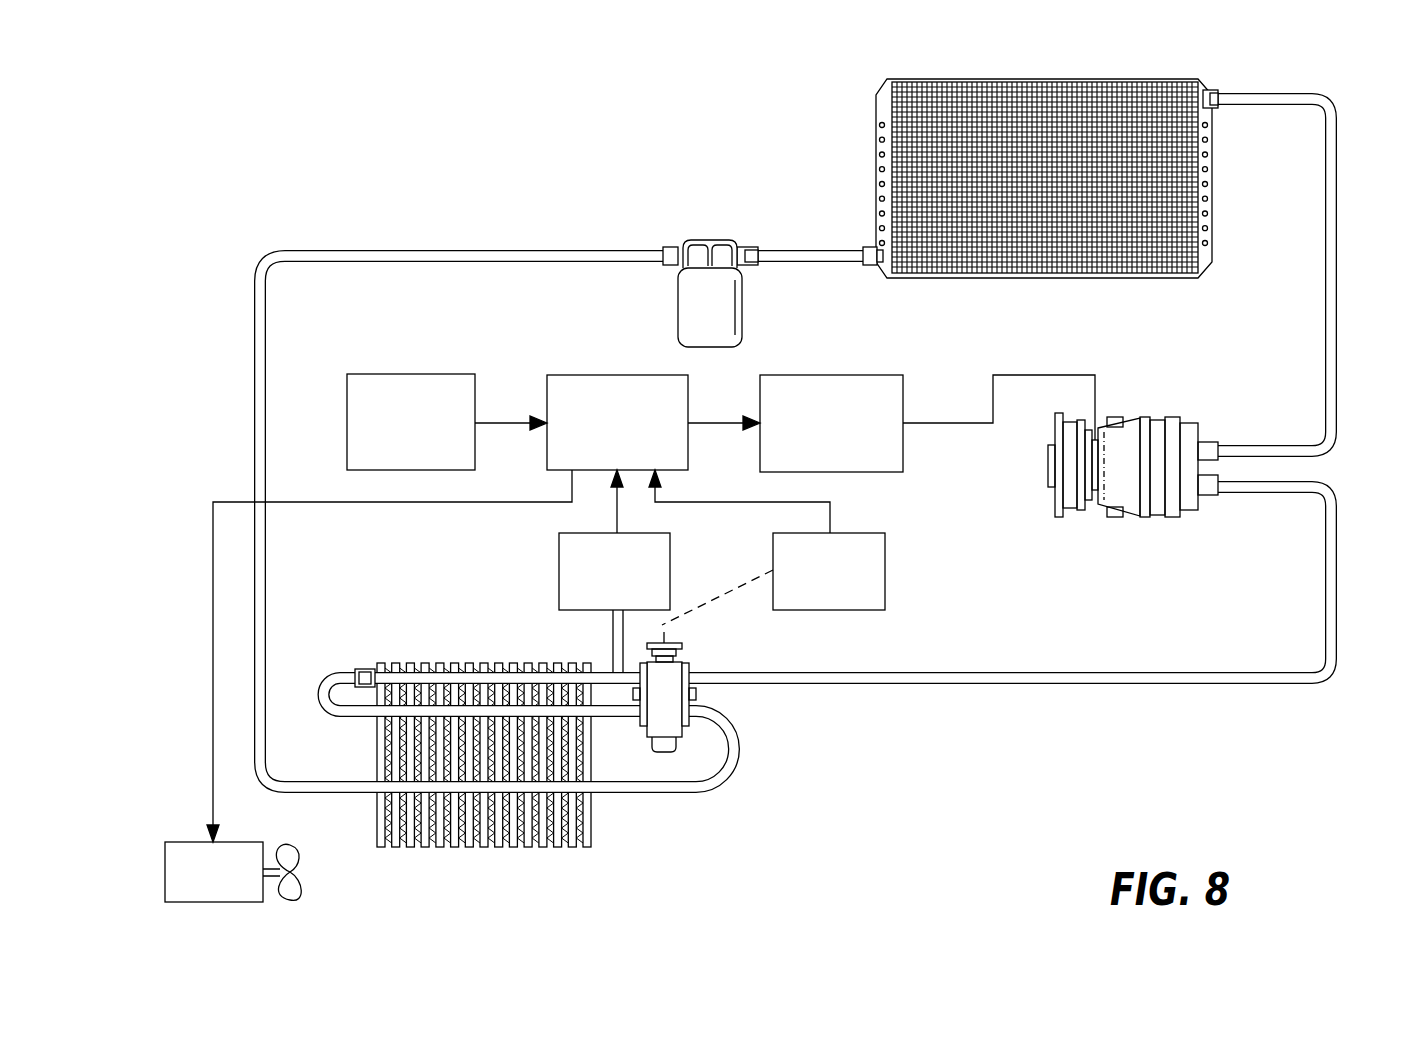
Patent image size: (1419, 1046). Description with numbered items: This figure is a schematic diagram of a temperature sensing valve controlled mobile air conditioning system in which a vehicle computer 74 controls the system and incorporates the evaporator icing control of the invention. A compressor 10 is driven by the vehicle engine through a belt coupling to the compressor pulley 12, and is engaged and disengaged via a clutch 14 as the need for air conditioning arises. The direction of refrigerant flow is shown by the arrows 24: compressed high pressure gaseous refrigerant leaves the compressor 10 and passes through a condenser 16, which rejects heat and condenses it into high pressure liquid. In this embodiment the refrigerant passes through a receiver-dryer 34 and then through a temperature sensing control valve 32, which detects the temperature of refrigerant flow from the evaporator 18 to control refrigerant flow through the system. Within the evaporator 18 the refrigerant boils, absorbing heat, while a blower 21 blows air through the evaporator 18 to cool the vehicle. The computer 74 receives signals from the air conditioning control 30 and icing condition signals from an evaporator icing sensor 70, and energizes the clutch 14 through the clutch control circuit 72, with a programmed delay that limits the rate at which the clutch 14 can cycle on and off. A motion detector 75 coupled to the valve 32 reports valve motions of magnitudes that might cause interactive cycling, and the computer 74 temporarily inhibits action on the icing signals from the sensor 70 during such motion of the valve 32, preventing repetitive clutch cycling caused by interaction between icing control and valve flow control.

The compressor 10 is at (1128, 497).
The compressor pulley 12 is at (1055, 512).
The clutch 14 is at (1097, 508).
The condenser 16 is at (1020, 79).
The evaporator 18 is at (455, 662).
The blower 21 is at (230, 842).
The arrows 24 is at (512, 223).
The air conditioning control 30 is at (405, 374).
The temperature sensing control valve 32 is at (670, 673).
The receiver dryer 34 is at (742, 300).
The evaporator icing sensor 70 is at (559, 569).
The clutch control circuit 72 is at (862, 375).
The vehicle computer 74 is at (582, 374).
The motion detector 75 is at (885, 569).